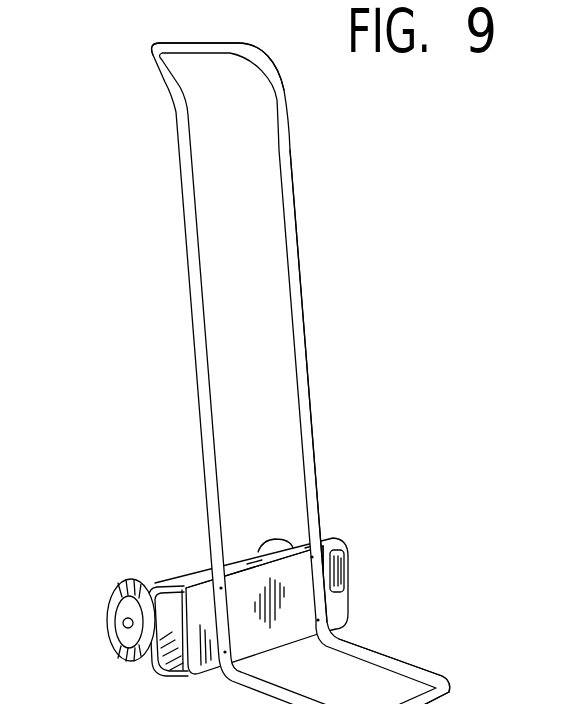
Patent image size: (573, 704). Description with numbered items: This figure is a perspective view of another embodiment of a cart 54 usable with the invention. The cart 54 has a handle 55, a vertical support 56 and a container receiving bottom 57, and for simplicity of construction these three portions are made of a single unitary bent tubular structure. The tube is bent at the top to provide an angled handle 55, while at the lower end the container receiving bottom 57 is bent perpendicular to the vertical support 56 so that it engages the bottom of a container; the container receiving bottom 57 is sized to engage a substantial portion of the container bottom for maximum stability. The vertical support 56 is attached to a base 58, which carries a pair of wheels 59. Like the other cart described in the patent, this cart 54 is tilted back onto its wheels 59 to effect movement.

The cart 54 is at (262, 373).
The handle 55 is at (277, 88).
The vertical support 56 is at (304, 370).
The container receiving bottom 57 is at (407, 668).
The base 58 is at (343, 593).
The wheels 59 is at (110, 605).